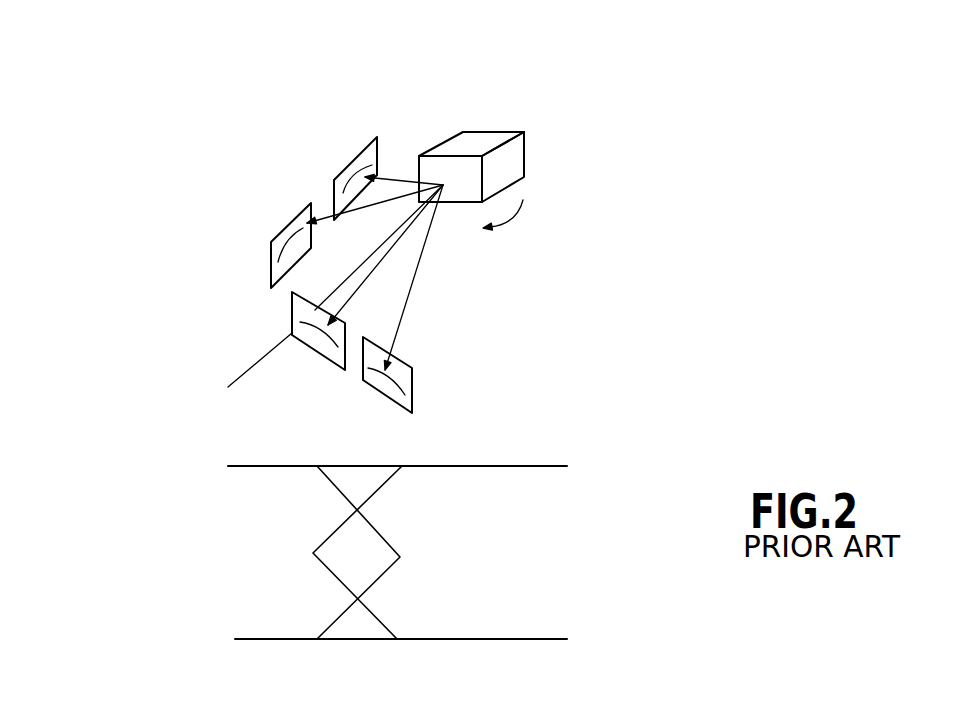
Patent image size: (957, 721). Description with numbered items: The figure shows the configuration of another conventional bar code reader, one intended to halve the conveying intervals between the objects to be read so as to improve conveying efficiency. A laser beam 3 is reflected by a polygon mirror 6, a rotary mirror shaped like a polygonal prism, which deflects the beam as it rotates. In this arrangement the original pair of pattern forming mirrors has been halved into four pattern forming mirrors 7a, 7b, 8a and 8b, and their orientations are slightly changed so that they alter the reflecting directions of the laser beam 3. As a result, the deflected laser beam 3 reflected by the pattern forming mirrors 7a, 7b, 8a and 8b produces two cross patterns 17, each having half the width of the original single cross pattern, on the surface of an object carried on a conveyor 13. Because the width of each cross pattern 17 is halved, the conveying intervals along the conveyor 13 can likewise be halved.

The laser beam 3 is at (267, 350).
The polygon mirror 6 is at (526, 160).
The pattern forming mirror 7a is at (347, 166).
The pattern forming mirror 7b is at (273, 240).
The pattern forming mirror 8a is at (308, 345).
The pattern forming mirror 8b is at (413, 370).
The conveyor 13 is at (462, 640).
The cross pattern 17 is at (338, 622).